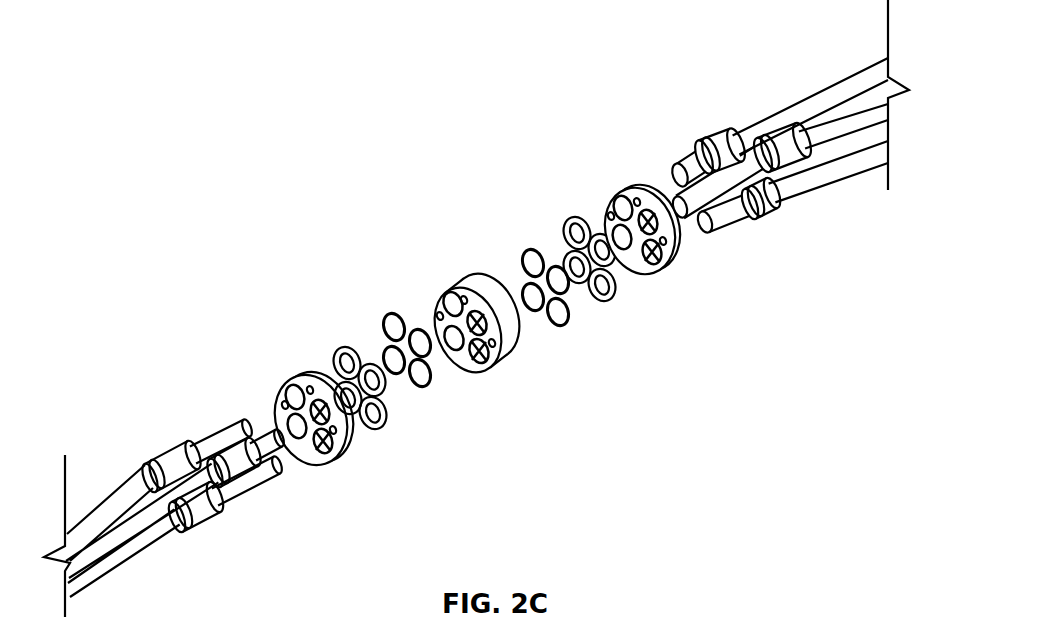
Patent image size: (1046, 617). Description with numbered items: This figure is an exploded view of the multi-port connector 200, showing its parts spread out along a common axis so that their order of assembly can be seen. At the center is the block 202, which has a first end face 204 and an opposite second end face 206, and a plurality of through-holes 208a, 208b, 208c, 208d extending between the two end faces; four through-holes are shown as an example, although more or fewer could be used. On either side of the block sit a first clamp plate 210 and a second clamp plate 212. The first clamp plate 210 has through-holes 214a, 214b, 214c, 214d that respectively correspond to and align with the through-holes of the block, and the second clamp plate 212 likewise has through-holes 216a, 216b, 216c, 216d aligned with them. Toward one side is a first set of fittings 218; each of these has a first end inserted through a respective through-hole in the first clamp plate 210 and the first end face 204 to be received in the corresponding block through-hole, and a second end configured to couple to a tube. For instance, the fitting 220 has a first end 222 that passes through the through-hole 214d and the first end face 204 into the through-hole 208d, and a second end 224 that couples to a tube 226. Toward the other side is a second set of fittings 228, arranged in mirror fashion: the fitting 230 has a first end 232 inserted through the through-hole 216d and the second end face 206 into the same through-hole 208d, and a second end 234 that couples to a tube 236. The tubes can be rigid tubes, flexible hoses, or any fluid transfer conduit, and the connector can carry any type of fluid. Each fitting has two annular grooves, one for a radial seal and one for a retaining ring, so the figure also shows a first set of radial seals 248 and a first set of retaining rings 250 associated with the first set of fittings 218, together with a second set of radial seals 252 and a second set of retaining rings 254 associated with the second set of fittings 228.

The multi-port connector 200 is at (174, 164).
The block 202 is at (444, 282).
The first end face 204 is at (512, 343).
The second end face 206 is at (482, 362).
The through-hole 208a is at (488, 366).
The through-hole 208b is at (451, 350).
The through-hole 208c is at (441, 312).
The through-hole 208d is at (473, 362).
The first clamp plate 210 is at (603, 176).
The second clamp plate 212 is at (292, 356).
The through-hole 214a is at (640, 268).
The through-hole 214b is at (592, 292).
The through-hole 214c is at (567, 228).
The through-hole 214d is at (637, 272).
The through-hole 216a is at (326, 455).
The through-hole 216b is at (290, 452).
The through-hole 216c is at (283, 396).
The through-hole 216d is at (315, 448).
The first set of fittings 218 is at (702, 128).
The fitting 220 is at (751, 186).
The first end 222 is at (703, 234).
The second end 224 is at (797, 152).
The tube 226 is at (828, 124).
The second set of fittings 228 is at (164, 432).
The fitting 230 is at (242, 431).
The first end 232 is at (271, 425).
The second end 234 is at (214, 519).
The tube 236 is at (130, 524).
The first set of radial seals 248 is at (521, 239).
The first set of retaining rings 250 is at (569, 203).
The second set of radial seals 252 is at (407, 398).
The second set of retaining rings 254 is at (338, 328).